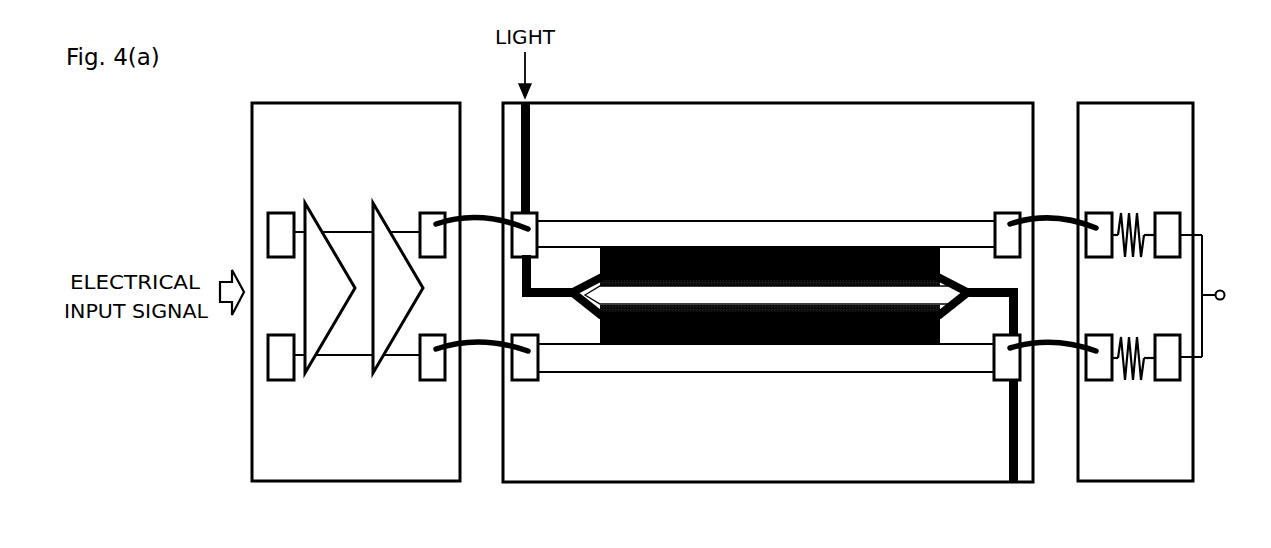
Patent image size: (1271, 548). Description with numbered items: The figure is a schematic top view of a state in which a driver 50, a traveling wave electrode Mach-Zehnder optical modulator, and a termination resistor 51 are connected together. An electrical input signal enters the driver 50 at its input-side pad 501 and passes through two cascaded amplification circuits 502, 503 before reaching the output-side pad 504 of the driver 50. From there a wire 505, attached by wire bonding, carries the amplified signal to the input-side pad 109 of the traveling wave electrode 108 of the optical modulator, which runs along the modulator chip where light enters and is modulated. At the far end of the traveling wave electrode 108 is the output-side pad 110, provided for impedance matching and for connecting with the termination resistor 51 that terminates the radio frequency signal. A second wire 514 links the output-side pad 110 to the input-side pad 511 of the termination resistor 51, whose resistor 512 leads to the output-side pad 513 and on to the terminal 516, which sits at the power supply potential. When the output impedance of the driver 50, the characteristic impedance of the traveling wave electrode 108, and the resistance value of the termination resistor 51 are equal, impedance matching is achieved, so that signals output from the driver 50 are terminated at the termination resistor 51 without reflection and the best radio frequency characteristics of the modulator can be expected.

The driver 50 is at (353, 103).
The termination resistor 51 is at (1137, 103).
The input-side pad 501 is at (273, 340).
The amplification circuit 502 is at (332, 203).
The amplification circuit 503 is at (400, 203).
The output-side pad 504 is at (433, 340).
The wire 505 is at (480, 338).
The traveling wave electrode 108 is at (836, 356).
The input-side pad 109 is at (529, 343).
The output-side pad 110 is at (1002, 341).
The wire 514 is at (1054, 338).
The input-side pad 511 is at (1100, 339).
The resistor 512 is at (1124, 248).
The output-side pad 513 is at (1172, 339).
The terminal (potential) 516 is at (1220, 300).